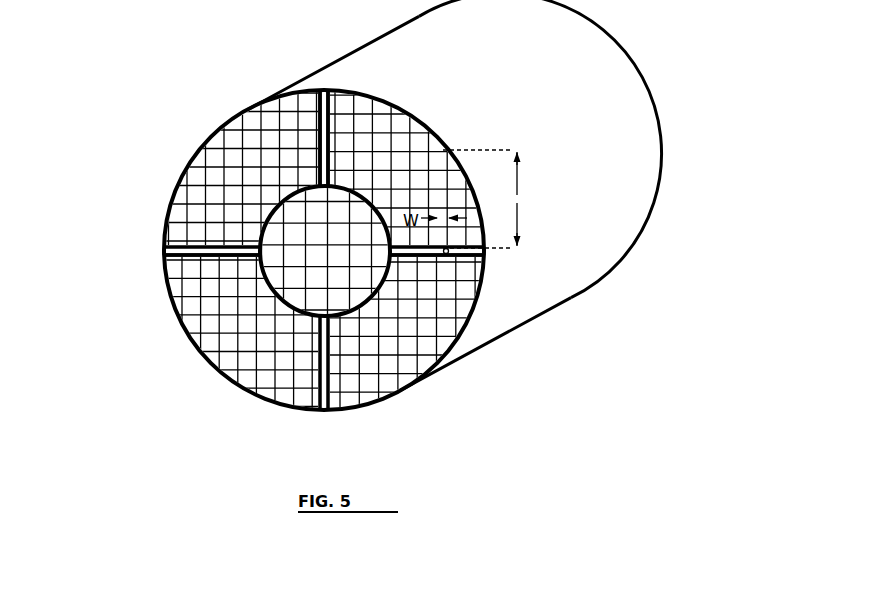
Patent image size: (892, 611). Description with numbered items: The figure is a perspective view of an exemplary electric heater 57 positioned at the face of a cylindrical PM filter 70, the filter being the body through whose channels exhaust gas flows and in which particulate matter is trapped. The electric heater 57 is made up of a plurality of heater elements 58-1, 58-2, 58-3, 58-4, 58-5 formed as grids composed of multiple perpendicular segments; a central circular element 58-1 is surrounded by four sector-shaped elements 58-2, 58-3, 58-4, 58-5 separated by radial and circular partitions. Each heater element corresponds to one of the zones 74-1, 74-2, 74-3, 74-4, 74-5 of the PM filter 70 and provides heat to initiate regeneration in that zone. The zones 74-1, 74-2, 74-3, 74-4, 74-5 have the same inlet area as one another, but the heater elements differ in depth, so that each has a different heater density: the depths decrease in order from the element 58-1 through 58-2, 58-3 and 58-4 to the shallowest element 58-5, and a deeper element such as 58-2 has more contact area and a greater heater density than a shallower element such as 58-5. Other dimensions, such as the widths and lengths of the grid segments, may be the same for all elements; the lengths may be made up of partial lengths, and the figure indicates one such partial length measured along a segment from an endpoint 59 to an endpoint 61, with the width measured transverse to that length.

The PM filter 70 is at (337, 61).
The electric heater 57 is at (133, 257).
The zone 74-1 is at (325, 251).
The zone 74-2 is at (406, 168).
The zone 74-3 is at (406, 332).
The zone 74-4 is at (242, 332).
The zone 74-5 is at (242, 168).
The heater element 58-1 is at (333, 296).
The heater element 58-2 is at (357, 122).
The heater element 58-3 is at (430, 300).
The heater element 58-4 is at (200, 305).
The heater element 58-5 is at (193, 201).
The endpoint 59 is at (445, 149).
The endpoint 61 is at (460, 255).